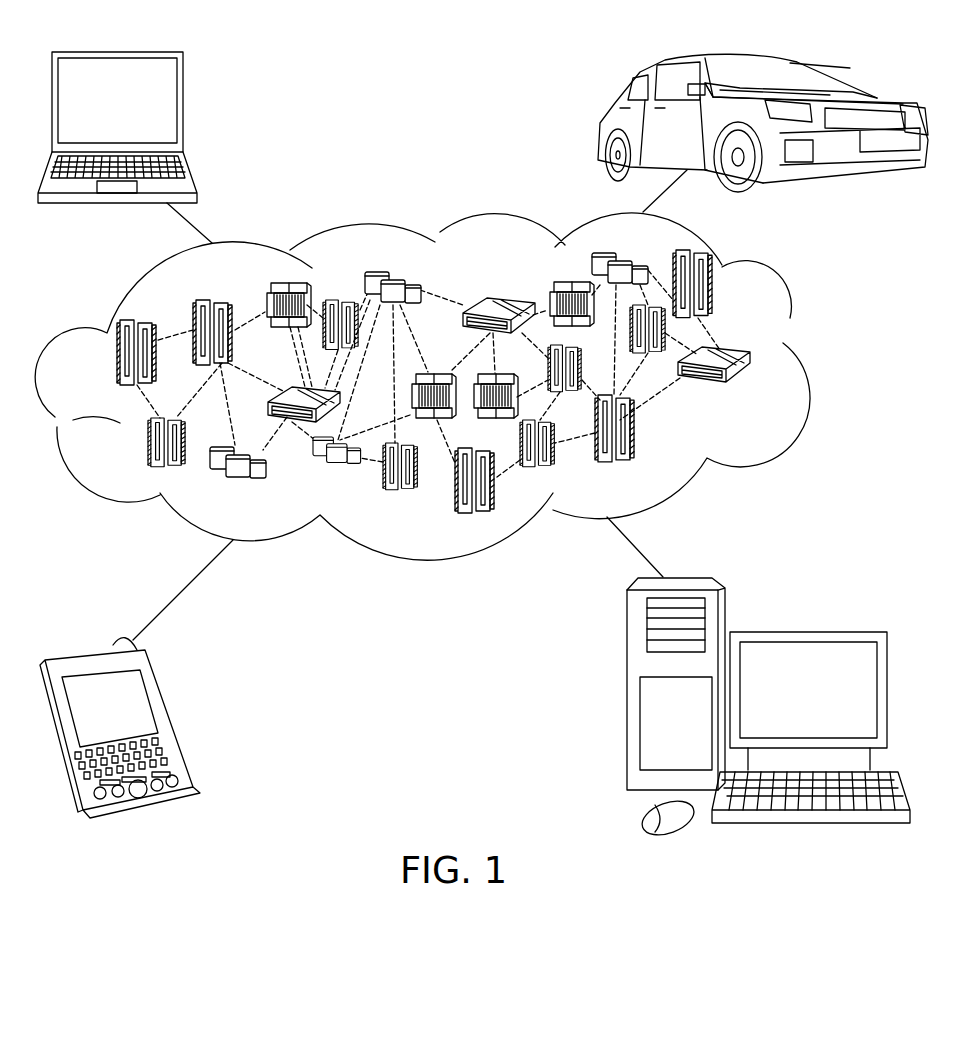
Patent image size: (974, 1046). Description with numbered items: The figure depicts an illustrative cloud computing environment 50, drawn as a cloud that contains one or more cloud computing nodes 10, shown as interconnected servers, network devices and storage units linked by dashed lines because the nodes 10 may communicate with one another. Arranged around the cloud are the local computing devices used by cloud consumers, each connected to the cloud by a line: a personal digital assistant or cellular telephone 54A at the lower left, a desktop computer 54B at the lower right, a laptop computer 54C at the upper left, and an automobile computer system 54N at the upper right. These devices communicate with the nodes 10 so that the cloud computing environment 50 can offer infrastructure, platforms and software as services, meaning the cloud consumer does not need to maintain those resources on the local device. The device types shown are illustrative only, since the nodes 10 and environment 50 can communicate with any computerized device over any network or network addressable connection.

The cloud computing nodes 10 is at (447, 386).
The cloud computing environment 50 is at (808, 363).
The personal digital assistant or cellular telephone 54A is at (173, 715).
The desktop computer 54B is at (803, 632).
The laptop computer 54C is at (182, 108).
The automobile computer system 54N is at (600, 122).